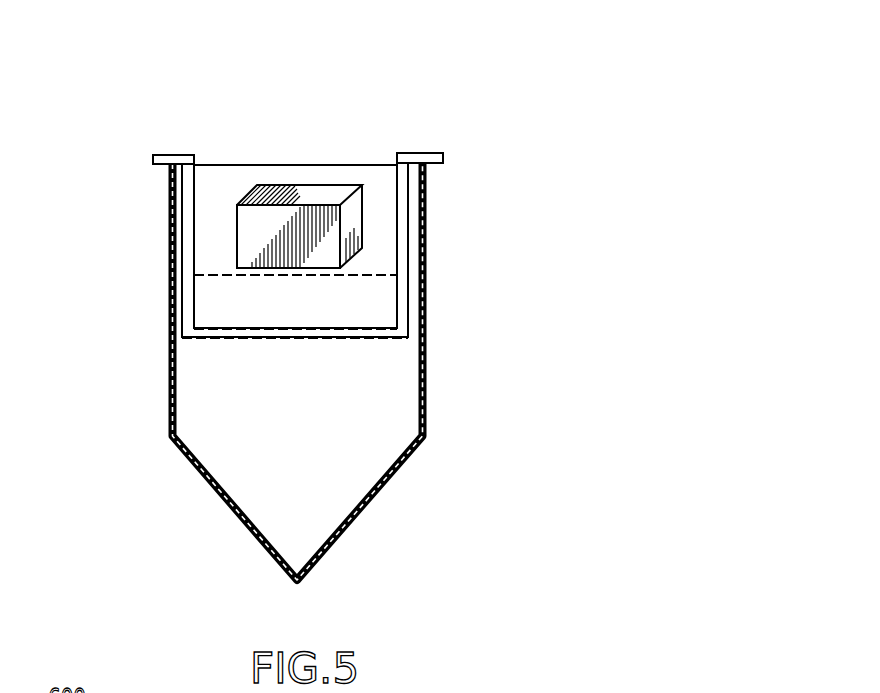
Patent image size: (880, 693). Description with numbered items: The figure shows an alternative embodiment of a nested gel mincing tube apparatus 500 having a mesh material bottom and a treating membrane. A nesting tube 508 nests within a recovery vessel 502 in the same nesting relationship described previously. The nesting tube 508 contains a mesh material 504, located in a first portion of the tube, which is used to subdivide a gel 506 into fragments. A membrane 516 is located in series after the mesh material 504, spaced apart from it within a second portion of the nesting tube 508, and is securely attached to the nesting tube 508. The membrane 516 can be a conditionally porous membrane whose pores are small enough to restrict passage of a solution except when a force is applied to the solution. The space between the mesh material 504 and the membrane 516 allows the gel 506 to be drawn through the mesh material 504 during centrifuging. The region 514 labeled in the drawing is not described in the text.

The mincing tube apparatus 500 is at (120, 102).
The recovery vessel 502 is at (428, 238).
The mesh material 504 is at (325, 275).
The gel 506 is at (322, 193).
The nesting tube 508 is at (186, 219).
The lower chamber 514 is at (318, 418).
The treating membrane 516 is at (230, 337).